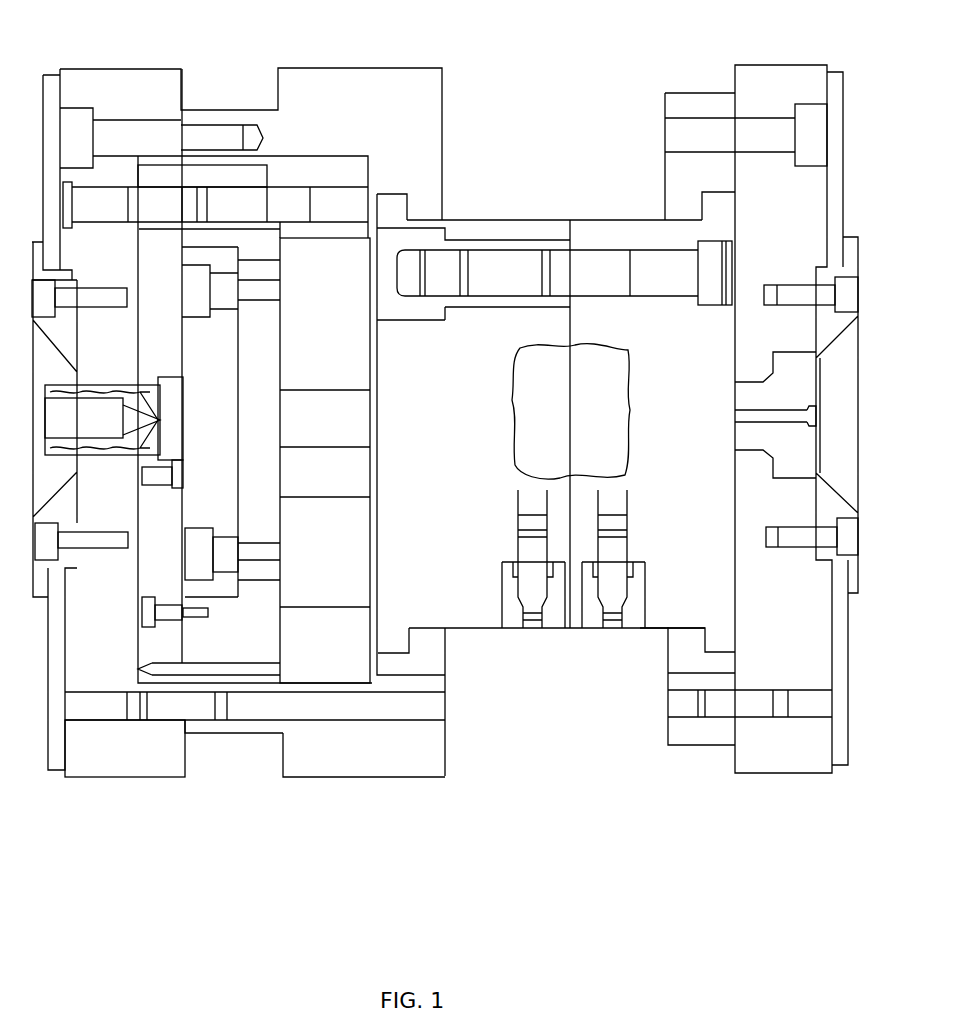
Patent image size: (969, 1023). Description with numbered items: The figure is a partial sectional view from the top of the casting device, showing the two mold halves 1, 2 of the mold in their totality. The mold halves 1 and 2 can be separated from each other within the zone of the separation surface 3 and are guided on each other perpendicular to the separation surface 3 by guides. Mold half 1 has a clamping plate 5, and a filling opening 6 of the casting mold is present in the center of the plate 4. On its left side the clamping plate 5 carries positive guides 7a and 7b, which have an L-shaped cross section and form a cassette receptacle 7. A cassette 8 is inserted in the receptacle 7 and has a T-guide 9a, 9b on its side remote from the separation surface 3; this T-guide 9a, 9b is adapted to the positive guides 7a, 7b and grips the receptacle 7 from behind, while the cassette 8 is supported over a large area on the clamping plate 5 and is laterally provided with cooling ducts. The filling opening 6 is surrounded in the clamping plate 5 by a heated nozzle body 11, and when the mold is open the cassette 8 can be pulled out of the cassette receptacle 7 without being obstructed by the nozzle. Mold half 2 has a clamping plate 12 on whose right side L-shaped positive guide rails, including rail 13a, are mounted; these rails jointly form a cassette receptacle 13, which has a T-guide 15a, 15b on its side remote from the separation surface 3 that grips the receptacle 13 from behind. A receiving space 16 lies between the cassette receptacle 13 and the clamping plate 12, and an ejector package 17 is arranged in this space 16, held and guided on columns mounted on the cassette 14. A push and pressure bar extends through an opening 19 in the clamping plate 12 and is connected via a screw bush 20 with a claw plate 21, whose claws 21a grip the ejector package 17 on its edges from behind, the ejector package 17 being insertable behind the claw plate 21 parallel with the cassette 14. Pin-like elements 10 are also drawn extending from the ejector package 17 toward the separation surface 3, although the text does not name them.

The mold half 1 is at (658, 757).
The mold half 2 is at (237, 783).
The separation surface 3 is at (573, 628).
The plate 4 is at (523, 263).
The clamping plate 5 is at (783, 72).
The filling opening 6 is at (742, 415).
The cassette receptacle 7 is at (641, 150).
The positive guide 7a is at (683, 642).
The positive guide 7b is at (677, 108).
The cassette 8 is at (679, 487).
The T-guide 9a is at (723, 640).
The T-guide 9b is at (718, 203).
The ejector pins 10 is at (528, 628).
The heated nozzle body 11 is at (797, 467).
The clamping plate 12 is at (123, 763).
The cassette receptacle 13 is at (453, 137).
The positive guide rail 13a is at (427, 212).
The cassette 14 is at (446, 529).
The T-guide 15a is at (390, 642).
The T-guide 15b is at (393, 210).
The receiving space 16 is at (341, 352).
The ejector package 17 is at (257, 528).
The opening 19 is at (110, 383).
The screw bush 20 is at (110, 457).
The claw plate 21 is at (163, 353).
The claws 21a is at (257, 247).